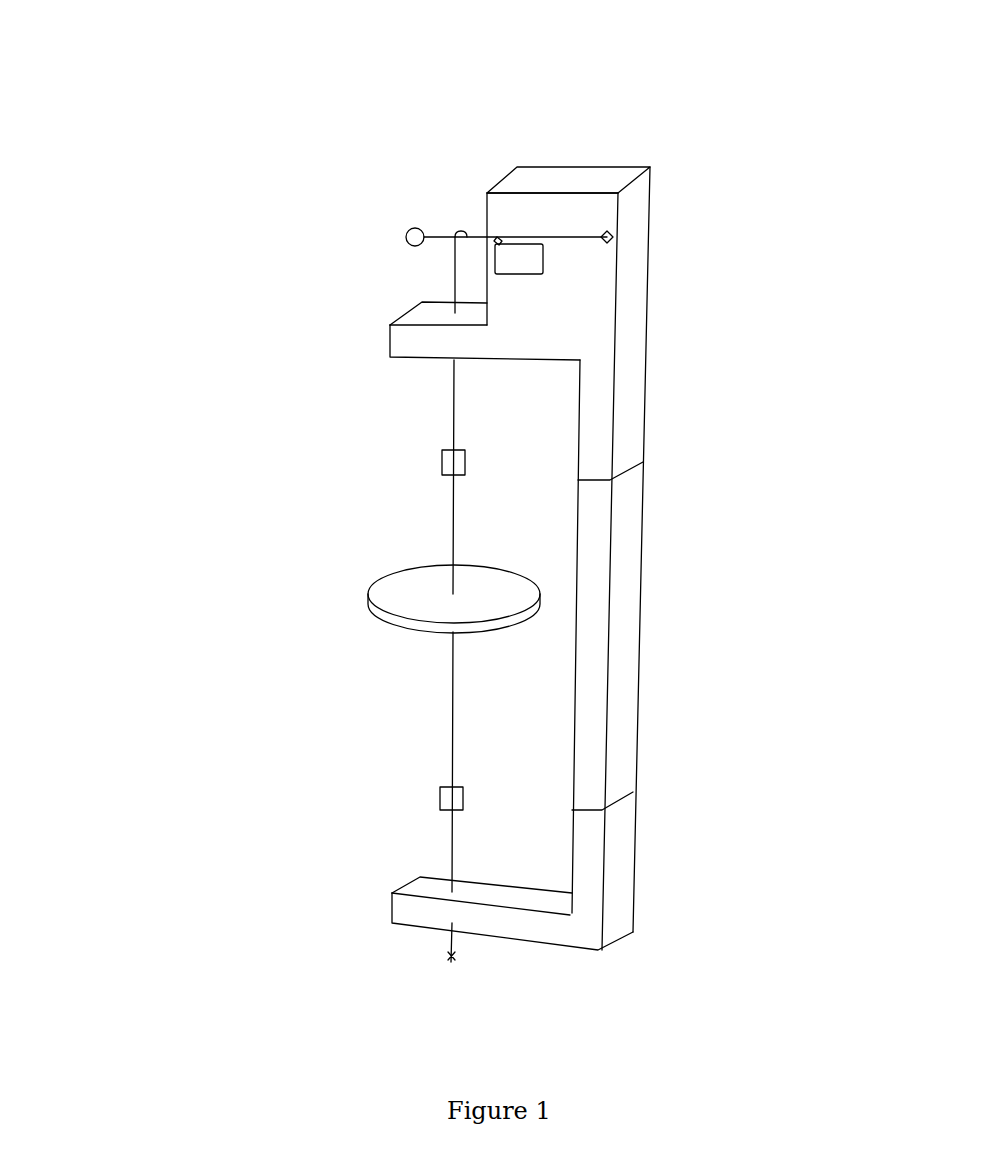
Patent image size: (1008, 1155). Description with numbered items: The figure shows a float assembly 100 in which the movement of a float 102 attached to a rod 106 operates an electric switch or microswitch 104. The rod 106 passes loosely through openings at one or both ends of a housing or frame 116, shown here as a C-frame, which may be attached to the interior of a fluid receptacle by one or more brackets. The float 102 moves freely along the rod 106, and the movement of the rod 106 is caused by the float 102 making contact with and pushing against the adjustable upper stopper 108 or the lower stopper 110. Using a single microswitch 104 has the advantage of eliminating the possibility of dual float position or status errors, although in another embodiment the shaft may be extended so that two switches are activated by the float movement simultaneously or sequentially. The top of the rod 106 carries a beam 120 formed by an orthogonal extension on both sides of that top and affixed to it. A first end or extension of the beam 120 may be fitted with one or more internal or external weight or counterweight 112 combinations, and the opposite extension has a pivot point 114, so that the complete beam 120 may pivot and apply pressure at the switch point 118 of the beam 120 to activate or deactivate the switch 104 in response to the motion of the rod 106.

The float assembly 100 is at (758, 104).
The float 102 is at (368, 578).
The microswitch 104 is at (556, 256).
The rod 106 is at (458, 522).
The upper stopper 108 is at (439, 461).
The lower stopper 110 is at (439, 792).
The counterweight 112 is at (408, 216).
The pivot point 114 is at (607, 216).
The frame 116 is at (589, 665).
The switch point 118 is at (500, 229).
The beam 120 is at (466, 232).